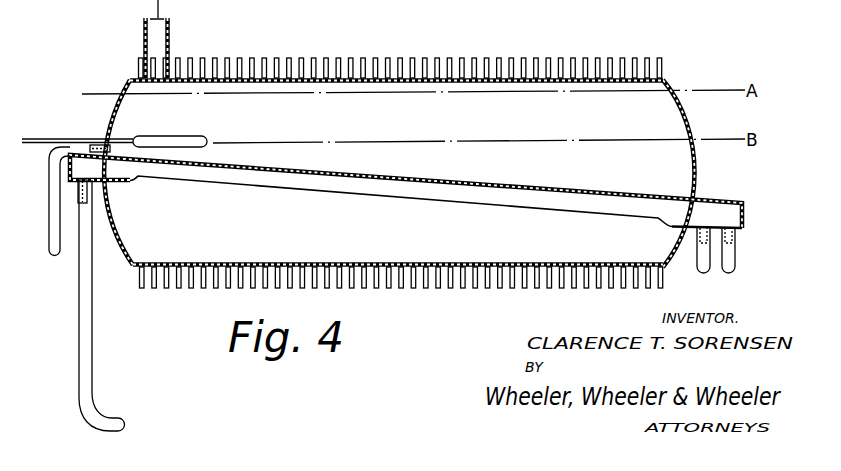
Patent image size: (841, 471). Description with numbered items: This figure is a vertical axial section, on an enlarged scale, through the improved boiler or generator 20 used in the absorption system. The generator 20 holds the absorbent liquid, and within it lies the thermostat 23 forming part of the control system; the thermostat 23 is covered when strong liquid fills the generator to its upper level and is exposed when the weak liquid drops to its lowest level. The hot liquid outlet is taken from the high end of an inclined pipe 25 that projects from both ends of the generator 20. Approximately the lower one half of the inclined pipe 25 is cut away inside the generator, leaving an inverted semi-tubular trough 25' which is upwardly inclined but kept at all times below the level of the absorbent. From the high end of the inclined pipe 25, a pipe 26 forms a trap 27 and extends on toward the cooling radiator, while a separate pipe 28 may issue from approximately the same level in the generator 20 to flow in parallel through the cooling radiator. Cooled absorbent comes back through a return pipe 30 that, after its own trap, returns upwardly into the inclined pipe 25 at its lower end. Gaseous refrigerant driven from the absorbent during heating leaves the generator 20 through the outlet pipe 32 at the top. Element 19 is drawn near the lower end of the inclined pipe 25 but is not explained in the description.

The generator 20 is at (700, 192).
The outlet pipe 32 is at (171, 29).
The thermostat 23 is at (160, 143).
The inclined pipe 25 is at (406, 191).
The inverted semi-tubular trough 25' is at (401, 191).
The separate pipe 28 is at (50, 217).
The pipe 26 is at (90, 310).
The trap 27 is at (100, 418).
The outlet tube 19 is at (697, 252).
The return pipe 30 is at (732, 264).